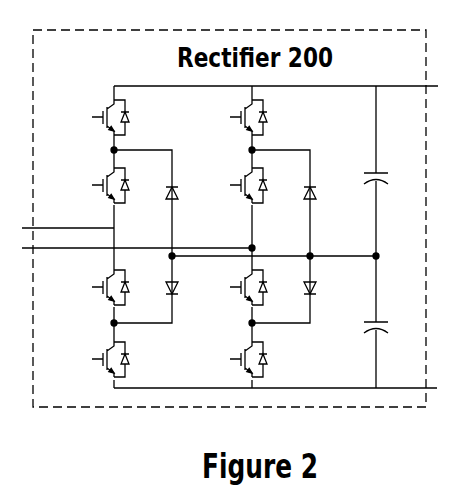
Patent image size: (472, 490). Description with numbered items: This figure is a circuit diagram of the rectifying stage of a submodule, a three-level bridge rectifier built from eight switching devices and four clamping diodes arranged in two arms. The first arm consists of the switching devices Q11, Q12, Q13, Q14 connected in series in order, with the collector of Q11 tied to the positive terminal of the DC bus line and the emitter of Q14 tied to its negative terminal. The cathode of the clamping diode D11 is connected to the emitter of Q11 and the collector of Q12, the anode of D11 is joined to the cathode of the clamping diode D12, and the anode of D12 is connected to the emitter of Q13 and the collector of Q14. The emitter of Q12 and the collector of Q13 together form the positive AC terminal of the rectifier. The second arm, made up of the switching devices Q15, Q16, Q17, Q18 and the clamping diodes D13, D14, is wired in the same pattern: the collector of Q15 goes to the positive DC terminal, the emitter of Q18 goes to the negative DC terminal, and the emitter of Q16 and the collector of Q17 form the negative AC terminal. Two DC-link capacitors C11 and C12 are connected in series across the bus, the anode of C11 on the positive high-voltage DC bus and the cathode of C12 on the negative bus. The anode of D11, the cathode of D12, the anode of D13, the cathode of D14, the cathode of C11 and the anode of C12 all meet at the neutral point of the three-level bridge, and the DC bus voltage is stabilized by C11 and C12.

The switching device Q11 is at (97, 122).
The switching device Q12 is at (97, 194).
The switching device Q13 is at (97, 291).
The switching device Q14 is at (97, 364).
The switching device Q15 is at (235, 122).
The switching device Q16 is at (235, 194).
The switching device Q17 is at (235, 291).
The switching device Q18 is at (235, 364).
The clamping diode D11 is at (159, 181).
The clamping diode D12 is at (159, 296).
The clamping diode D13 is at (297, 181).
The clamping diode D14 is at (297, 296).
The DC-link capacitor C11 is at (364, 171).
The DC-link capacitor C12 is at (366, 322).